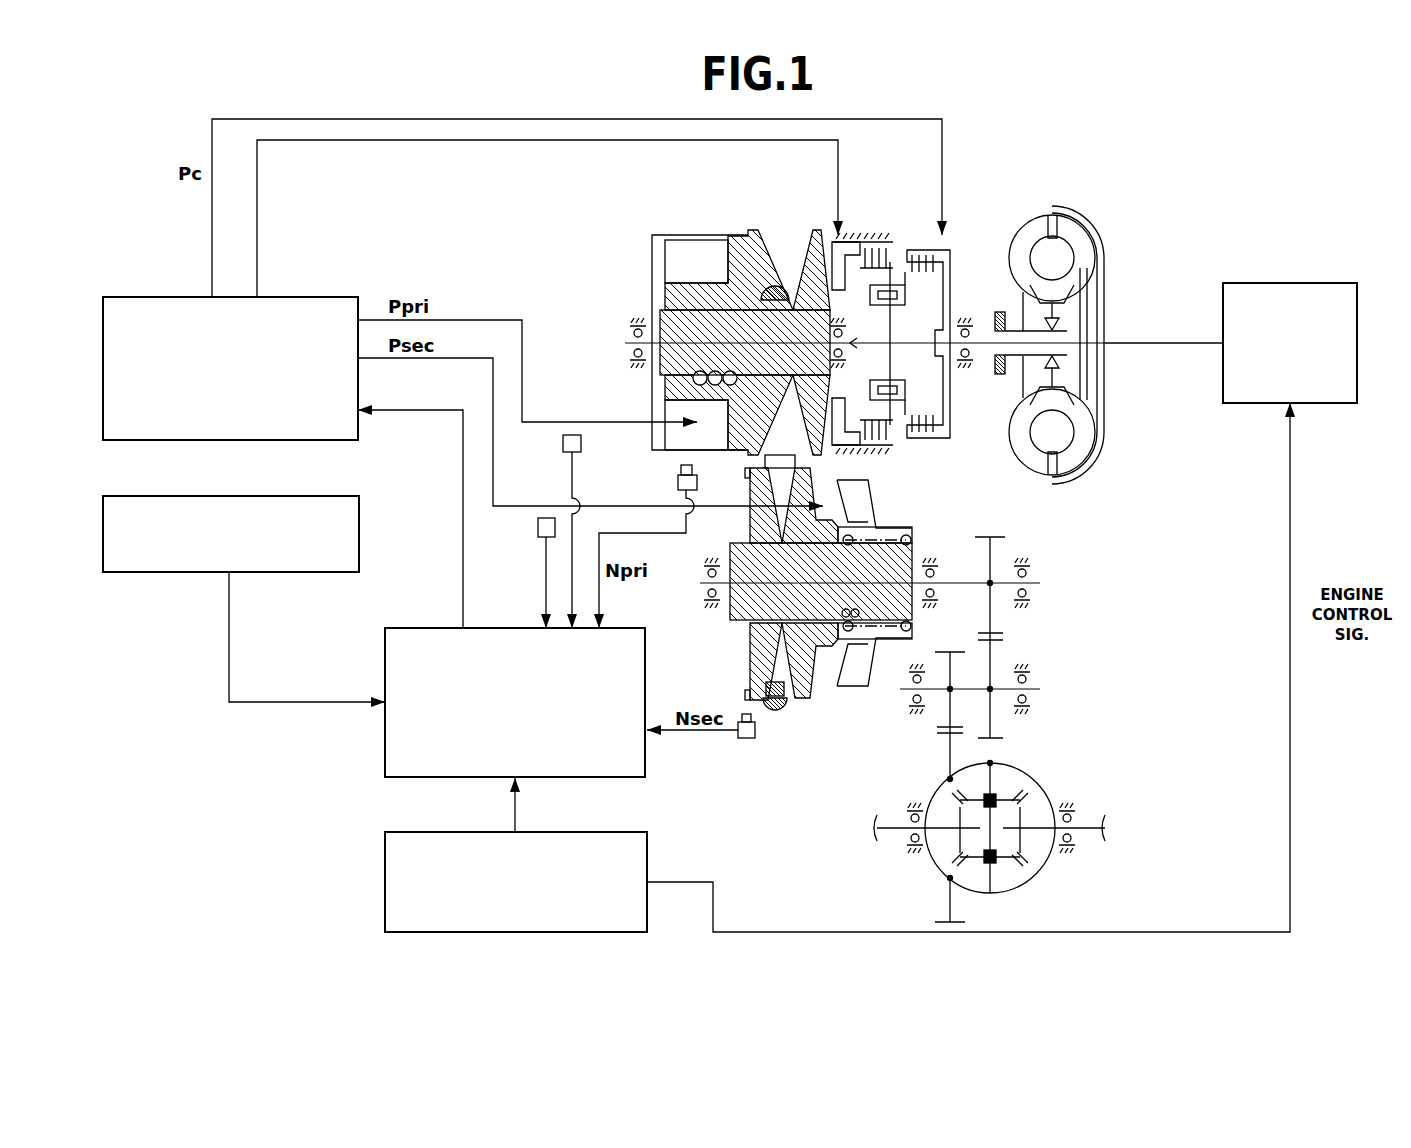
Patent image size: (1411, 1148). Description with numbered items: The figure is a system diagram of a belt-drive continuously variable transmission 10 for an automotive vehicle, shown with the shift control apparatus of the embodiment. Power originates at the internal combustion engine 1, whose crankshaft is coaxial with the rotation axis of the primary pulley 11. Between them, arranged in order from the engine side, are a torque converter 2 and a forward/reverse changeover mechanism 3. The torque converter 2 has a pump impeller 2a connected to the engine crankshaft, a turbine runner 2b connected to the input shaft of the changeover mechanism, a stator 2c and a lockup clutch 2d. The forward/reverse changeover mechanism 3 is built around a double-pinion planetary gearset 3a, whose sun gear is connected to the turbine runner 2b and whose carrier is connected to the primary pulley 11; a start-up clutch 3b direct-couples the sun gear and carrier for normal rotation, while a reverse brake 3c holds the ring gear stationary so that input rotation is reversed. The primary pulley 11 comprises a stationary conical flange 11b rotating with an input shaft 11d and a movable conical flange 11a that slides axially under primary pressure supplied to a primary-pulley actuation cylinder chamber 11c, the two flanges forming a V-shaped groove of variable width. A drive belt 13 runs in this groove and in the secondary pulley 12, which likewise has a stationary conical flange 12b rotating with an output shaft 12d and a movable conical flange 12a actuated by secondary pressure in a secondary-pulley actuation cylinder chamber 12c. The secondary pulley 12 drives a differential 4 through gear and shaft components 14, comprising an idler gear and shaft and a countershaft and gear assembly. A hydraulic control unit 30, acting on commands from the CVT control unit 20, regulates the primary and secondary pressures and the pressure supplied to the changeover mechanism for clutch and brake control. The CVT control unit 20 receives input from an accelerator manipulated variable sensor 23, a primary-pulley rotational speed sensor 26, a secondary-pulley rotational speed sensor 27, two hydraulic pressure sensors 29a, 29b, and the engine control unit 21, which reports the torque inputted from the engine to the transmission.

The internal combustion engine 1 is at (1318, 290).
The torque converter 2 is at (1093, 302).
The pump impeller 2a is at (1023, 230).
The turbine runner 2b is at (1085, 230).
The stator 2c is at (1058, 295).
The lockup clutch 2d is at (1098, 315).
The forward/reverse changeover mechanism 3 is at (891, 292).
The double-pinion planetary gearset 3a is at (898, 245).
The start-up clutch 3b is at (920, 255).
The reverse brake 3c is at (860, 250).
The differential 4 is at (1040, 768).
The continuously variable transmission 10 is at (733, 299).
The primary pulley 11 is at (733, 299).
The movable conical flange 11a is at (749, 258).
The stationary conical flange 11b is at (817, 253).
The primary-pulley actuation cylinder chamber 11c is at (685, 253).
The input shaft 11d is at (985, 355).
The secondary pulley 12 is at (854, 623).
The movable conical flange 12a is at (801, 703).
The stationary conical flange 12b is at (758, 662).
The secondary-pulley actuation cylinder chamber 12c is at (823, 696).
The output shaft 12d is at (951, 588).
The drive belt 13 is at (783, 463).
The gear and shaft components 14 is at (950, 672).
The CVT control unit 20 is at (618, 628).
The engine control unit 21 is at (580, 832).
The accelerator manipulated variable sensor 23 is at (308, 496).
The primary-pulley rotational speed sensor 26 is at (678, 486).
The secondary-pulley rotational speed sensor 27 is at (748, 742).
The hydraulic pressure sensor 29a is at (563, 445).
The hydraulic pressure sensor 29b is at (538, 530).
The hydraulic control unit 30 is at (298, 297).